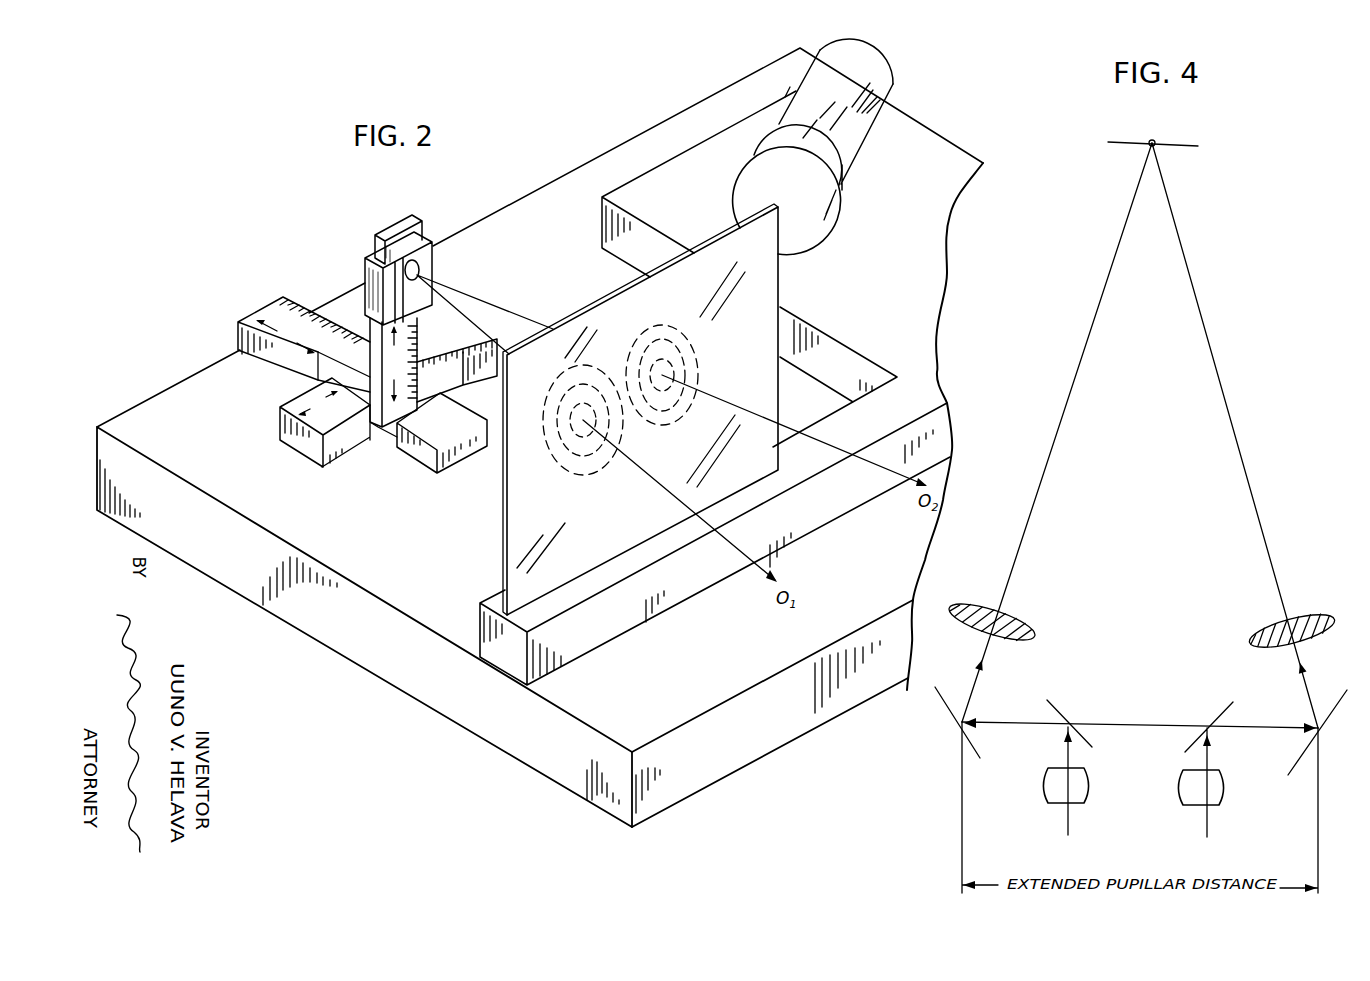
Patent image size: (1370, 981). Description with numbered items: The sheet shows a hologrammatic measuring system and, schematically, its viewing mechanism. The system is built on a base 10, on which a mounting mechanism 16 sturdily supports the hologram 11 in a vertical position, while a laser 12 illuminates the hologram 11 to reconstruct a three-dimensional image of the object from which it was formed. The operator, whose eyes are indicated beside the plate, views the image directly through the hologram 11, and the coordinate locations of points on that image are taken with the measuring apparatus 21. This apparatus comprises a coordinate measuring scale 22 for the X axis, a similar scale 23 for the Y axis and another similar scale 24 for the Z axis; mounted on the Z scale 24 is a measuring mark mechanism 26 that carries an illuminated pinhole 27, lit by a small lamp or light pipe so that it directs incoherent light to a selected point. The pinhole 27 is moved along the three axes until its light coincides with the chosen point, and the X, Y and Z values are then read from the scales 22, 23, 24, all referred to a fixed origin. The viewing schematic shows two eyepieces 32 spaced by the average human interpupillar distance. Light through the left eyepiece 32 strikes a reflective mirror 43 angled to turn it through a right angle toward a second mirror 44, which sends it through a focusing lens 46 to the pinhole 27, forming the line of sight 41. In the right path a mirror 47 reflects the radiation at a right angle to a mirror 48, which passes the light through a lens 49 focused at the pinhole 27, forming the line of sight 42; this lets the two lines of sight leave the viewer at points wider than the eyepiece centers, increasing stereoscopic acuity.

In FIG. 2, the base 10 is at (463, 715).
In FIG. 2, the hologram 11 is at (502, 526).
In FIG. 2, the laser 12 is at (880, 80).
In FIG. 2, the mounting mechanism 16 is at (624, 617).
In FIG. 2, the measuring apparatus 21 is at (258, 385).
In FIG. 2, the coordinate measuring scale 22 is at (280, 442).
In FIG. 2, the scale 23 is at (297, 303).
In FIG. 2, the scale 24 is at (419, 333).
In FIG. 2, the measuring mark mechanism 26 is at (433, 240).
In FIG. 2, the pinhole 27 is at (420, 268).
In FIG. 4, the pinhole 27 is at (1154, 141).
In FIG. 4, the eyepieces 32 is at (1054, 802).
In FIG. 4, the line of sight 41 is at (1052, 440).
In FIG. 4, the line of sight 42 is at (1231, 406).
In FIG. 4, the reflective mirror 43 is at (1059, 705).
In FIG. 4, the second mirror 44 is at (948, 720).
In FIG. 4, the focusing lens 46 is at (1032, 630).
In FIG. 4, the mirror 47 is at (1222, 707).
In FIG. 4, the mirror 48 is at (1333, 710).
In FIG. 4, the lens 49 is at (1278, 626).